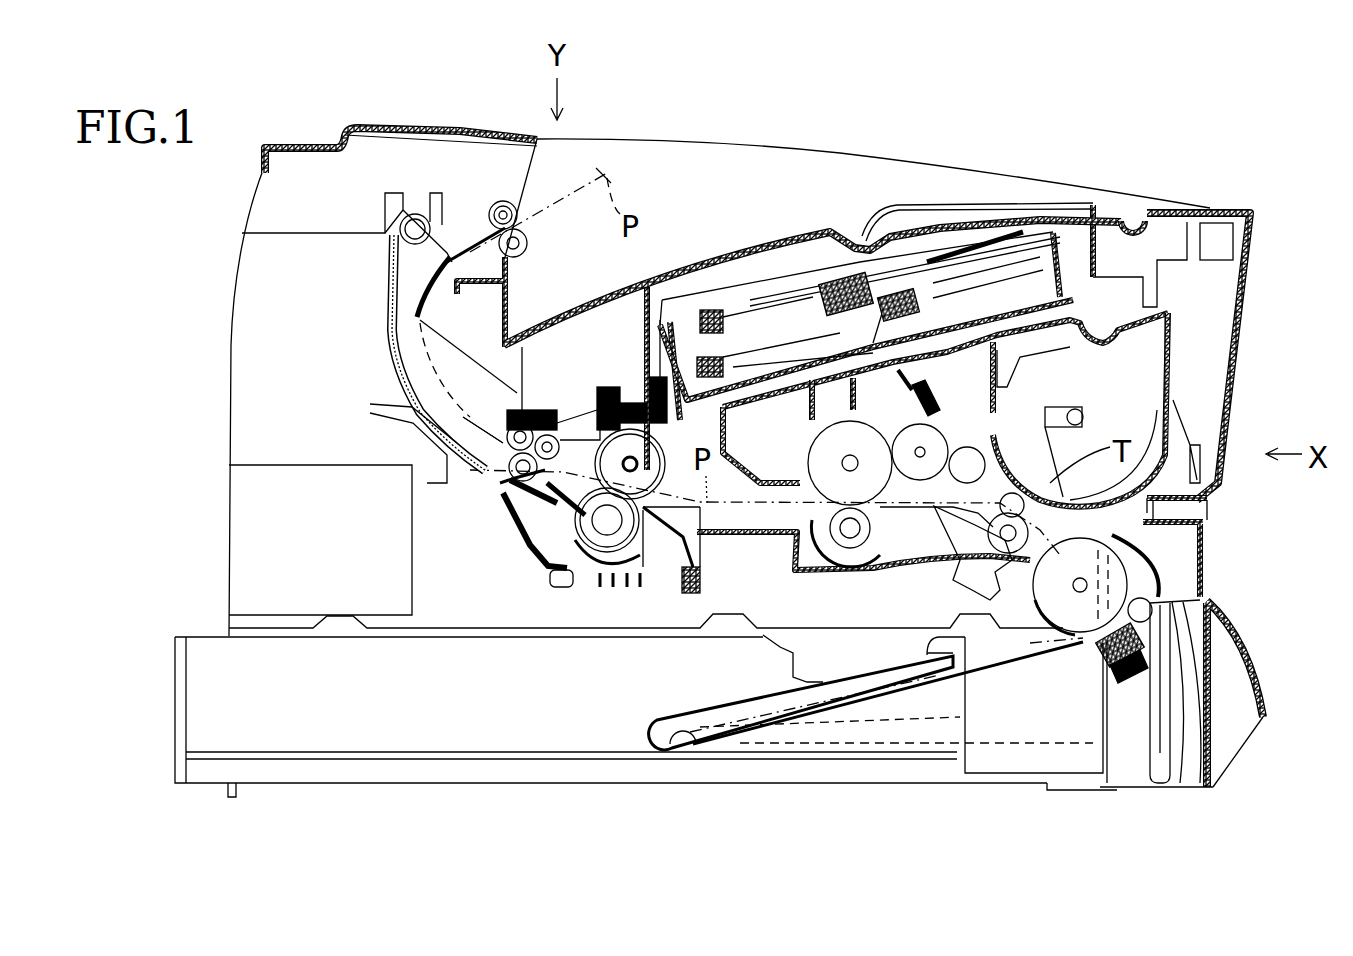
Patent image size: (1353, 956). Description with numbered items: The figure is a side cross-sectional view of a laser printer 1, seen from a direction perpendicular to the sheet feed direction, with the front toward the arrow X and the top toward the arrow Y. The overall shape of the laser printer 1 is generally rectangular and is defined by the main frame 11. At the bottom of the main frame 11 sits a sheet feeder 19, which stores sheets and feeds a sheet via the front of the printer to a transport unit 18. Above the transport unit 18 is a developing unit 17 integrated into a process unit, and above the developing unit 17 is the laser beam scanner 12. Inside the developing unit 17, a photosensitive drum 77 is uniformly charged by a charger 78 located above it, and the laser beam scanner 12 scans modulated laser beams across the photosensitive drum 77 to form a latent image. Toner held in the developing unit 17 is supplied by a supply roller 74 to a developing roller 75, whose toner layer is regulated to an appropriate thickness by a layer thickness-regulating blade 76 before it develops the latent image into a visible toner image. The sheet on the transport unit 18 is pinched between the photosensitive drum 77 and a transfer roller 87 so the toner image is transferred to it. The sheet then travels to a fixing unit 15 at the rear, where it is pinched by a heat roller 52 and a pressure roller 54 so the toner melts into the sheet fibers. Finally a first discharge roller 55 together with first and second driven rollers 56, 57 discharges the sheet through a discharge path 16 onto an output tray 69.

The laser printer 1 is at (1170, 176).
The main frame 11 is at (488, 133).
The laser beam scanner 12 is at (818, 253).
The fixing unit 15 is at (506, 574).
The discharge path 16 is at (364, 342).
The developing unit 17 is at (1186, 352).
The transport unit 18 is at (893, 580).
The sheet feeder 19 is at (905, 786).
The heat roller 52 is at (608, 392).
The pressure roller 54 is at (648, 570).
The first discharge roller 55 is at (505, 467).
The first driven roller 56 is at (548, 425).
The second driven roller 57 is at (503, 440).
The output tray 69 is at (739, 250).
The supply roller 74 is at (990, 458).
The developing roller 75 is at (940, 448).
The layer thickness-regulating blade 76 is at (903, 422).
The photosensitive drum 77 is at (810, 462).
The charger 78 is at (840, 420).
The transfer roller 87 is at (840, 540).